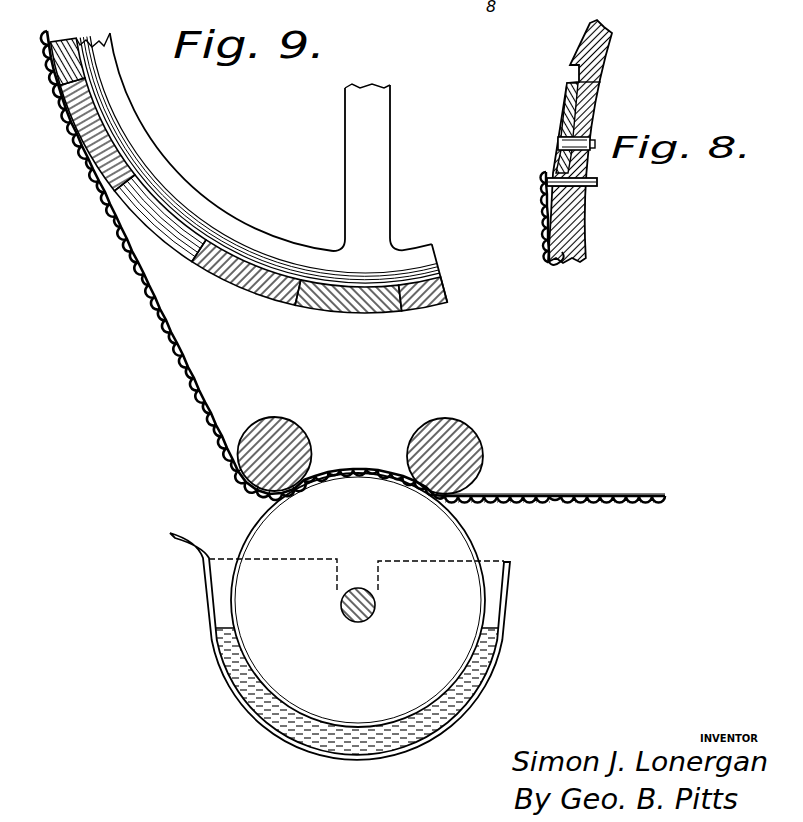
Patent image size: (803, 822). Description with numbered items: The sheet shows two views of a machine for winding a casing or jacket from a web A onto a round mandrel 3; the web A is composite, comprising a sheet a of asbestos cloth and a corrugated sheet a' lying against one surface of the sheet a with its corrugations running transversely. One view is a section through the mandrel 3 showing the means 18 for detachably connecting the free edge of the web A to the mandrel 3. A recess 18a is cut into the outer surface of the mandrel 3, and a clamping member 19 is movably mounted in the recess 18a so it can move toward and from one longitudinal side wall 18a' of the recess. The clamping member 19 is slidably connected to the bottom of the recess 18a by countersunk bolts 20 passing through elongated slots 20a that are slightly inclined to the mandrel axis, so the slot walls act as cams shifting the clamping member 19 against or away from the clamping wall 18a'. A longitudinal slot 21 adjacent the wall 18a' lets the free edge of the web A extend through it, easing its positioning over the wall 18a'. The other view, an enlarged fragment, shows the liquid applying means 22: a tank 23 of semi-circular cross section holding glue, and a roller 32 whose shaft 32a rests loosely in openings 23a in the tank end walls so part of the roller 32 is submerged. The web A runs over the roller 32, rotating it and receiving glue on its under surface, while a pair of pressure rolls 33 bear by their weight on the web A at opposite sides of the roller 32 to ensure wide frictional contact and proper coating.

In FIG. 9, the mandrel 3 is at (249, 186).
In FIG. 9, the pressure rolls 33 is at (300, 414).
In FIG. 9, the roller 32 is at (467, 555).
In FIG. 9, the roller shaft 32a is at (358, 623).
In FIG. 9, the openings or recesses 23a is at (378, 590).
In FIG. 9, the liquid applying means 22 is at (356, 646).
In FIG. 9, the tank 23 is at (500, 654).
In FIG. 9, the web A is at (548, 495).
In FIG. 8, the web A is at (550, 259).
In FIG. 9, the sheet a is at (552, 478).
In FIG. 9, the corrugated sheet a' is at (555, 520).
In FIG. 8, the means for detachably connecting the web to the mandrel 18 is at (556, 156).
In FIG. 8, the recess 18a is at (591, 141).
In FIG. 8, the clamping wall 18a' is at (583, 201).
In FIG. 8, the clamping member 19 is at (562, 110).
In FIG. 8, the countersunk bolts 20 is at (585, 141).
In FIG. 8, the elongated slots 20a is at (587, 104).
In FIG. 8, the longitudinal slot 21 is at (581, 173).